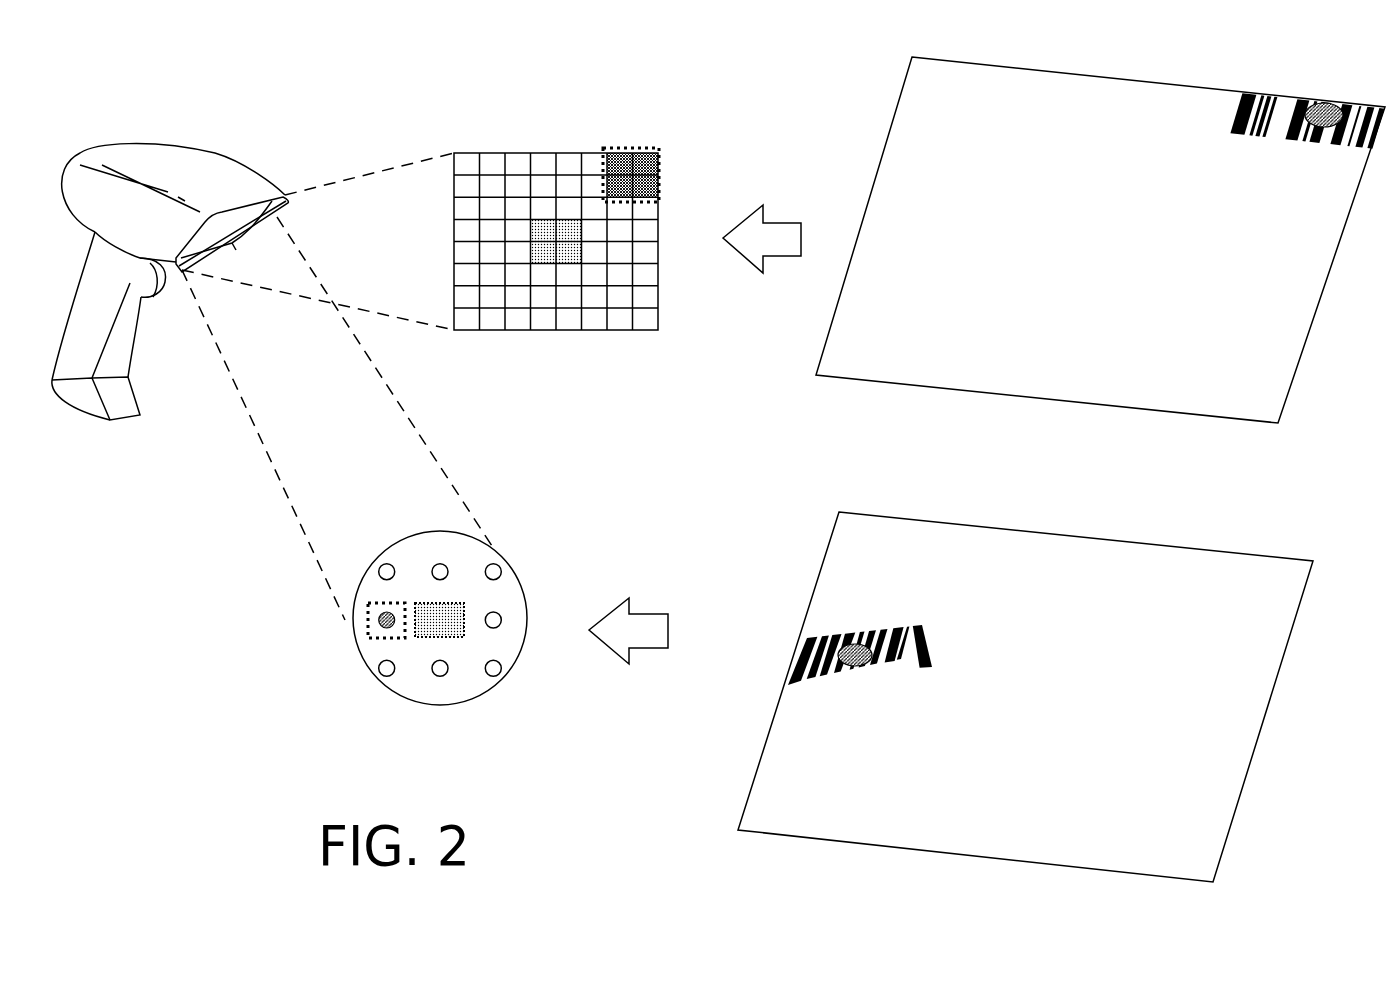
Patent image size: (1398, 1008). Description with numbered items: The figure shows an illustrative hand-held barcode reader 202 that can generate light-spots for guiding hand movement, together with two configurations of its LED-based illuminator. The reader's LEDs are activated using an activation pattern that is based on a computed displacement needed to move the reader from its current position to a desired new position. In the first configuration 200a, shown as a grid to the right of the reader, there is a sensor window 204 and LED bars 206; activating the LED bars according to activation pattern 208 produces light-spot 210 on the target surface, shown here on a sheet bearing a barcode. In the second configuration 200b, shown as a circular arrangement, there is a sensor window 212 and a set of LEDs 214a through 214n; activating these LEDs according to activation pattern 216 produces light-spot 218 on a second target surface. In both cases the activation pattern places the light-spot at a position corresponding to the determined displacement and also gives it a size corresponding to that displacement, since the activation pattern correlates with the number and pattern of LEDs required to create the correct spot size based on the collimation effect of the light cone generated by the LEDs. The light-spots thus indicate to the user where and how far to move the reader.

The configuration 200a is at (418, 126).
The configuration 200b is at (365, 527).
The hand-held barcode reader 202 is at (108, 420).
The sensor window 204 is at (527, 220).
The LED bars 206 is at (658, 327).
The activation pattern 208 is at (658, 176).
The light-spot 210 is at (1333, 102).
The sensor window 212 is at (450, 603).
The LED 214a is at (378, 668).
The LED 214n is at (500, 668).
The activation pattern 216 is at (370, 620).
The light-spot 218 is at (853, 642).